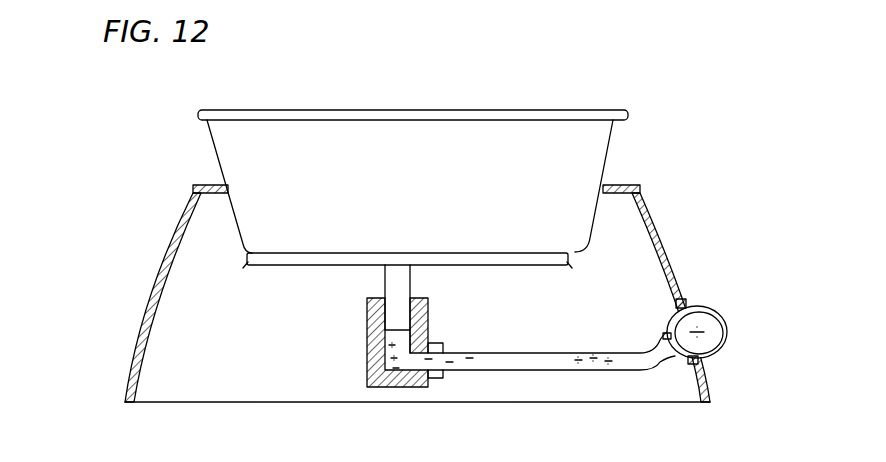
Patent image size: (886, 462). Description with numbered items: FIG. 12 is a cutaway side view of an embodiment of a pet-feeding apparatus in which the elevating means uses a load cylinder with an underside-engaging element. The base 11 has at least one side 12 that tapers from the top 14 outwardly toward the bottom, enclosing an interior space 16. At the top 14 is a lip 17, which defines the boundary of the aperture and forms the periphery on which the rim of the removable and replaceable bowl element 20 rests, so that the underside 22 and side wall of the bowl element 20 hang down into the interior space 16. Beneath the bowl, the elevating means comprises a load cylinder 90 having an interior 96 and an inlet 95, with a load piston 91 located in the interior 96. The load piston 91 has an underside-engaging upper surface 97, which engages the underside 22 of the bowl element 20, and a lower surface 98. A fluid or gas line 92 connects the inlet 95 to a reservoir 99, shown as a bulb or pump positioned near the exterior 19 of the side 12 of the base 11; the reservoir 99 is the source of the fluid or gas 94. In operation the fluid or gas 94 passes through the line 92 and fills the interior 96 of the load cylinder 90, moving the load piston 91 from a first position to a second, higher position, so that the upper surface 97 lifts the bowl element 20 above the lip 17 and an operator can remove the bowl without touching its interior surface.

The base 11 is at (65, 173).
The side 12 is at (712, 381).
The top 14 is at (178, 188).
The interior space 16 is at (222, 362).
The lip 17 is at (207, 185).
The exterior 19 is at (690, 294).
The bowl element 20 is at (640, 99).
The underside 22 is at (400, 251).
The load cylinder 90 is at (430, 318).
The load piston 91 is at (406, 286).
The fluid or gas line 92 is at (543, 351).
The fluid or gas 94 is at (512, 358).
The inlet 95 is at (444, 347).
The interior 96 is at (367, 373).
The underside-engaging upper surface 97 is at (588, 264).
The lower surface 98 is at (374, 318).
The reservoir 99 is at (727, 325).